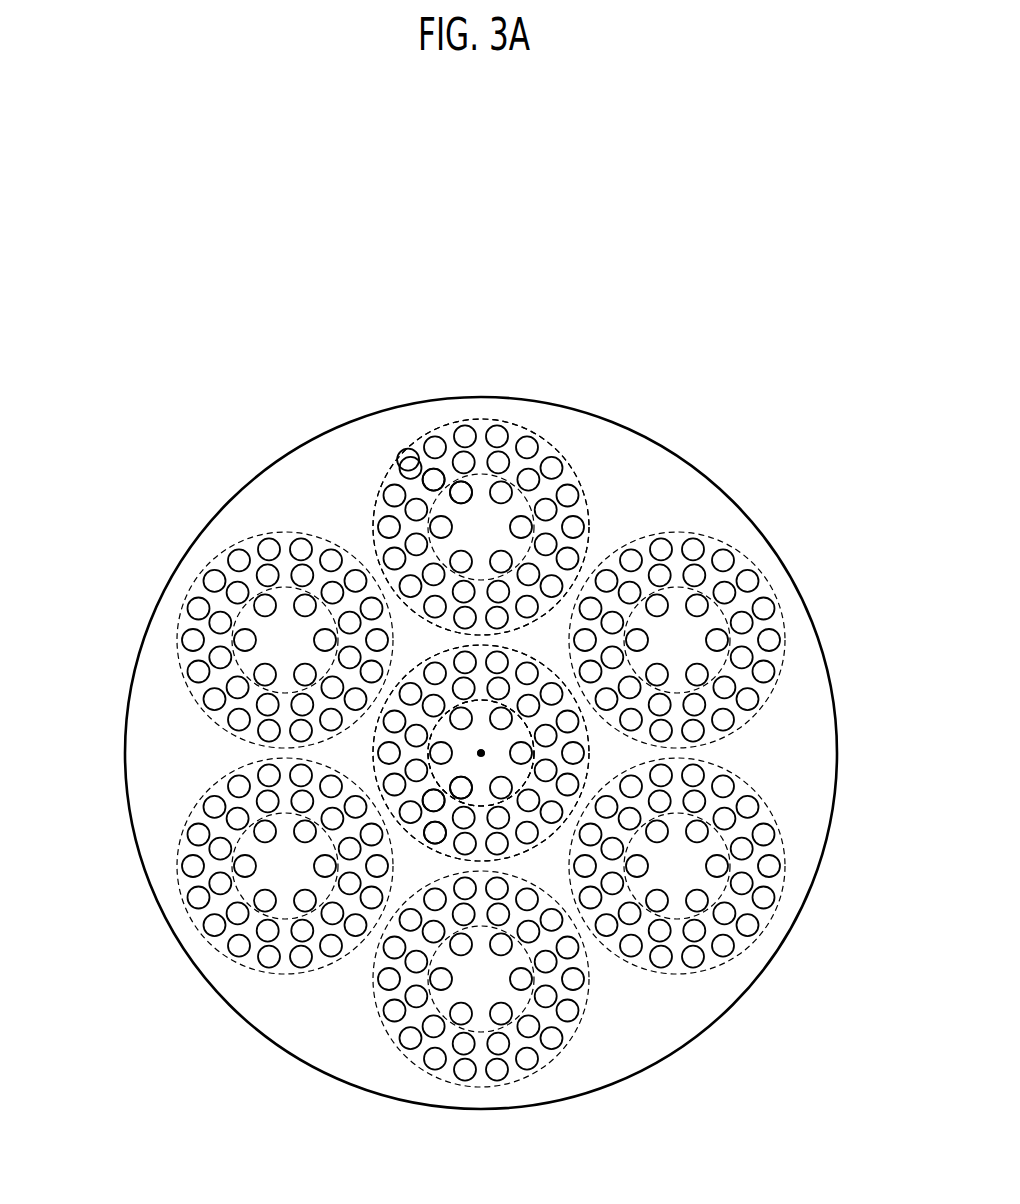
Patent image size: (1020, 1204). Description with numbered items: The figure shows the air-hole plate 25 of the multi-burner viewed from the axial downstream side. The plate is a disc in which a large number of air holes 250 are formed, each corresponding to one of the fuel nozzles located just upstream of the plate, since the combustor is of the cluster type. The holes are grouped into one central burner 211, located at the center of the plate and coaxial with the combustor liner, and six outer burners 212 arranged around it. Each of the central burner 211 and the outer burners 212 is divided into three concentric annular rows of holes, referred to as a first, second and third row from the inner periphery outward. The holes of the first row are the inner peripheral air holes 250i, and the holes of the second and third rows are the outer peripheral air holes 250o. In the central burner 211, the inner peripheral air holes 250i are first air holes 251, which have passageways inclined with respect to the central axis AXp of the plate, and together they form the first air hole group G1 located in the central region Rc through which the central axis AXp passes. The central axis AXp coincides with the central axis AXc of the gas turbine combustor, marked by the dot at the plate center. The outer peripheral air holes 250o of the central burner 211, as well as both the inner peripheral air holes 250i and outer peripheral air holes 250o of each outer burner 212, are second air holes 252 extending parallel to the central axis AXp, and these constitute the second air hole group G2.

The air-hole plate 25 is at (705, 458).
The central burner 211 is at (603, 755).
The outer burner 212 is at (545, 428).
The air hole 250 is at (433, 838).
The outer peripheral air hole 250o is at (433, 472).
The inner peripheral air hole 250i is at (452, 486).
The first air hole 251 is at (468, 790).
The second air hole 252 is at (432, 803).
The first air hole group G1 is at (510, 800).
The second air hole group G2 is at (519, 474).
The central region Rc is at (481, 753).
The central axis of the gas turbine combustor AXc is at (481, 753).
The central axis of the air-hole plate AXp is at (481, 753).